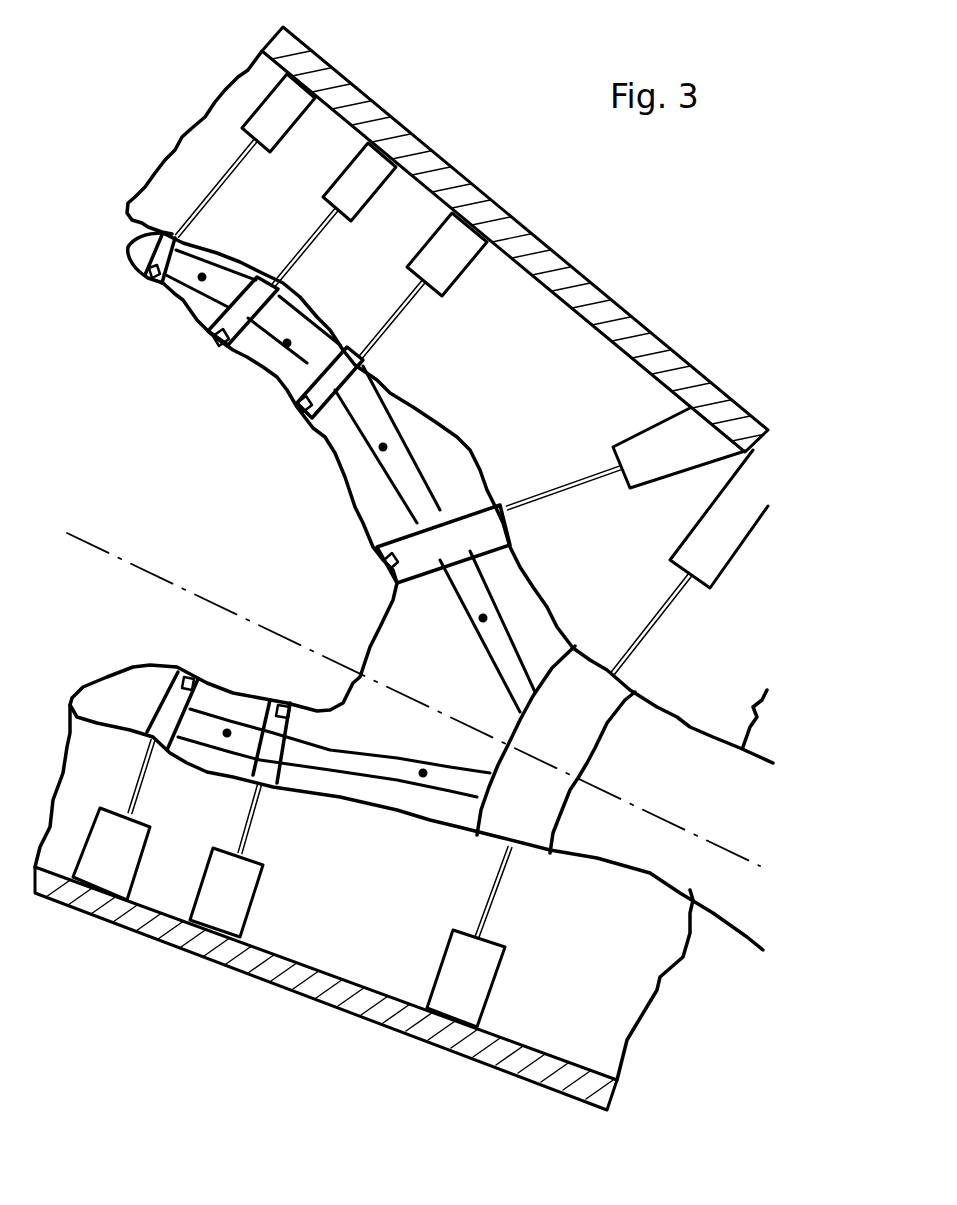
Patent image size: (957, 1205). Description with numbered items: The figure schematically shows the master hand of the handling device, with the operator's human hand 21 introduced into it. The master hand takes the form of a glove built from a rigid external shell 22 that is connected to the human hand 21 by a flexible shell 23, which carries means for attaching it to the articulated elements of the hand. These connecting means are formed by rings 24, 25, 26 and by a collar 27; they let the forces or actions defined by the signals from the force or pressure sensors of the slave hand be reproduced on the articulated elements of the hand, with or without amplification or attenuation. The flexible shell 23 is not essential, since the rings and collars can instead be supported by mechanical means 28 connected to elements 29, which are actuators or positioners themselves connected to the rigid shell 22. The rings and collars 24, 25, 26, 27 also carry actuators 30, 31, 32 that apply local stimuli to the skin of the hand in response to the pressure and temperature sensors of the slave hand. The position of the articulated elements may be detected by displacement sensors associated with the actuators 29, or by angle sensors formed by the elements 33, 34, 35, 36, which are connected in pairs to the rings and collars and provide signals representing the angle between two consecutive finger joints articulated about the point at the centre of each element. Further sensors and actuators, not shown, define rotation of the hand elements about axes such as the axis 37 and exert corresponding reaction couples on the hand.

The conduit 21 is at (423, 628).
The rigid external shell 22 is at (582, 282).
The flexible shell 23 is at (160, 160).
The ring 24 is at (222, 308).
The ring 25 is at (313, 382).
The ring 26 is at (410, 535).
The collar 27 is at (595, 700).
The mechanical means 28 is at (218, 195).
The actuator or positioner 29 is at (300, 97).
The actuator 30 is at (224, 349).
The actuator 31 is at (301, 410).
The actuator 32 is at (388, 561).
The angle sensor element 33 is at (192, 265).
The angle sensor element 34 is at (275, 327).
The angle sensor element 35 is at (403, 468).
The angle sensor element 36 is at (498, 640).
The axis 37 is at (147, 572).